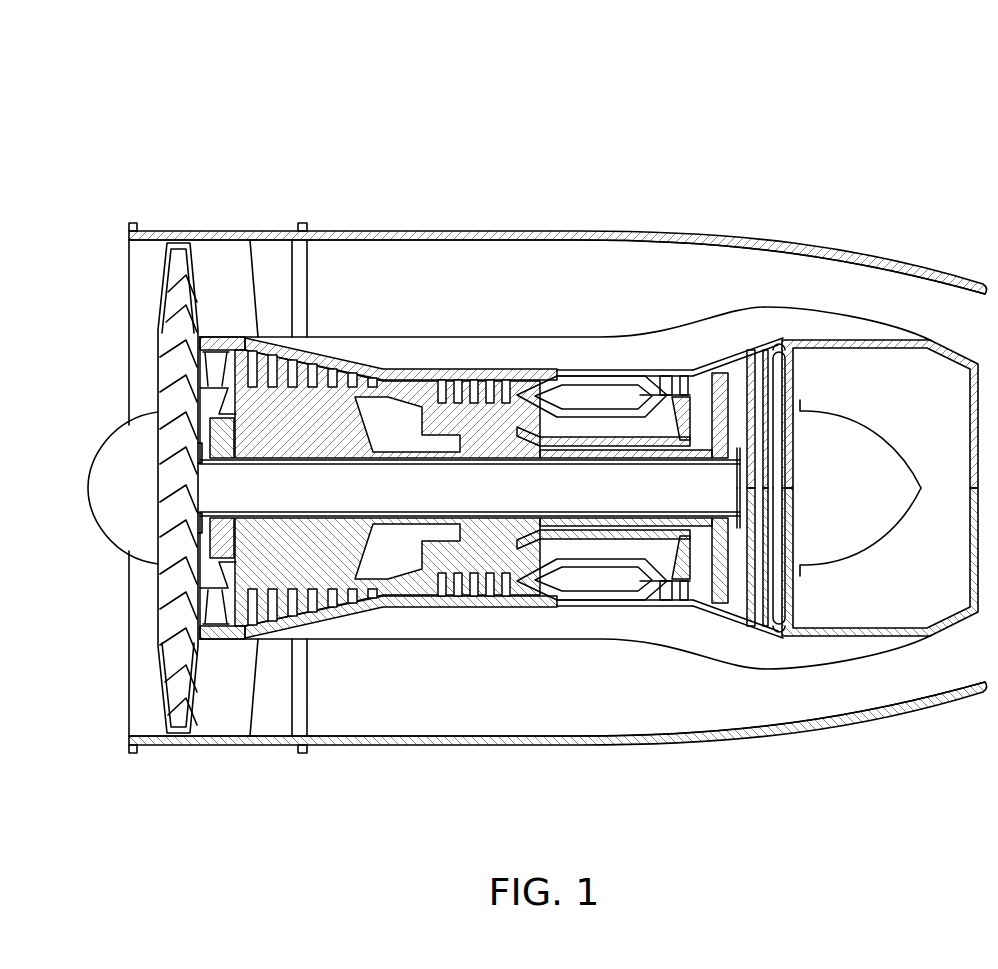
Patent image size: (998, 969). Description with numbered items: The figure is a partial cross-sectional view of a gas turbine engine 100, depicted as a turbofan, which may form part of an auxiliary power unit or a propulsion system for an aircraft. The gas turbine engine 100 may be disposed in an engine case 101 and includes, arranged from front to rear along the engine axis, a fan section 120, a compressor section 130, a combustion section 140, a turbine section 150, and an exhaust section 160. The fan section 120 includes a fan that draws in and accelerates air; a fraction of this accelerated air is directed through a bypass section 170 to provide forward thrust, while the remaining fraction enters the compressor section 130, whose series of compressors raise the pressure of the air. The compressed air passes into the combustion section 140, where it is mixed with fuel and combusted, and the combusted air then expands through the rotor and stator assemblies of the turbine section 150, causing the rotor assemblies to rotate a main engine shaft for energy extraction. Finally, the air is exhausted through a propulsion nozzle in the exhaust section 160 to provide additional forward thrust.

The gas turbine engine 100 is at (536, 435).
The engine case 101 is at (368, 229).
The bypass section 170 is at (480, 257).
The fan section 120 is at (212, 782).
The compressor section 130 is at (470, 782).
The combustion section 140 is at (473, 782).
The turbine section 150 is at (800, 782).
The exhaust section 160 is at (927, 782).